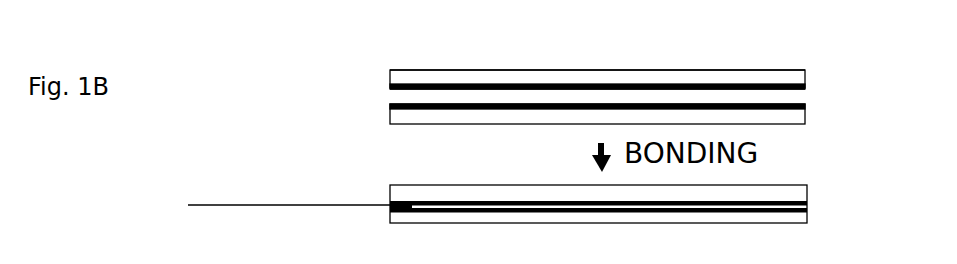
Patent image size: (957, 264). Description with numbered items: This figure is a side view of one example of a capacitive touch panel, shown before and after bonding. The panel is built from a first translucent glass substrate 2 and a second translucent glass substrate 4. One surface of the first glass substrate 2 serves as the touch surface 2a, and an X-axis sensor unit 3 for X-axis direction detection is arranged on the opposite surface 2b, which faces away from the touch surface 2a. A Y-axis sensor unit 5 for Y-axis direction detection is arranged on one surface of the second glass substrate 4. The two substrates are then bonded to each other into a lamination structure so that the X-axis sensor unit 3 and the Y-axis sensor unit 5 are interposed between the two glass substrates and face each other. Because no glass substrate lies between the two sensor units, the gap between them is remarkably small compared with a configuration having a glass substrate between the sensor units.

The first translucent glass substrate 2 is at (778, 78).
The touch surface 2a is at (432, 70).
The opposite surface 2b is at (390, 88).
The X-axis sensor unit 3 is at (806, 88).
The second translucent glass substrate 4 is at (785, 118).
The Y-axis sensor unit 5 is at (806, 106).